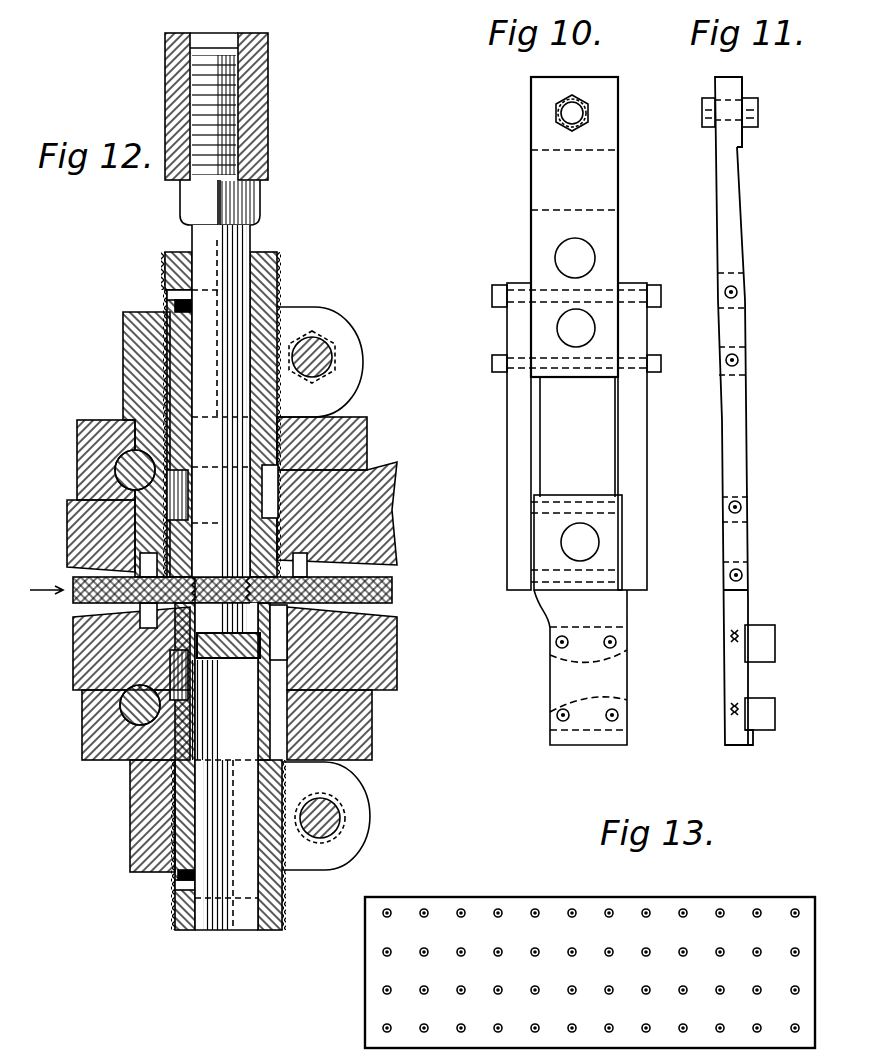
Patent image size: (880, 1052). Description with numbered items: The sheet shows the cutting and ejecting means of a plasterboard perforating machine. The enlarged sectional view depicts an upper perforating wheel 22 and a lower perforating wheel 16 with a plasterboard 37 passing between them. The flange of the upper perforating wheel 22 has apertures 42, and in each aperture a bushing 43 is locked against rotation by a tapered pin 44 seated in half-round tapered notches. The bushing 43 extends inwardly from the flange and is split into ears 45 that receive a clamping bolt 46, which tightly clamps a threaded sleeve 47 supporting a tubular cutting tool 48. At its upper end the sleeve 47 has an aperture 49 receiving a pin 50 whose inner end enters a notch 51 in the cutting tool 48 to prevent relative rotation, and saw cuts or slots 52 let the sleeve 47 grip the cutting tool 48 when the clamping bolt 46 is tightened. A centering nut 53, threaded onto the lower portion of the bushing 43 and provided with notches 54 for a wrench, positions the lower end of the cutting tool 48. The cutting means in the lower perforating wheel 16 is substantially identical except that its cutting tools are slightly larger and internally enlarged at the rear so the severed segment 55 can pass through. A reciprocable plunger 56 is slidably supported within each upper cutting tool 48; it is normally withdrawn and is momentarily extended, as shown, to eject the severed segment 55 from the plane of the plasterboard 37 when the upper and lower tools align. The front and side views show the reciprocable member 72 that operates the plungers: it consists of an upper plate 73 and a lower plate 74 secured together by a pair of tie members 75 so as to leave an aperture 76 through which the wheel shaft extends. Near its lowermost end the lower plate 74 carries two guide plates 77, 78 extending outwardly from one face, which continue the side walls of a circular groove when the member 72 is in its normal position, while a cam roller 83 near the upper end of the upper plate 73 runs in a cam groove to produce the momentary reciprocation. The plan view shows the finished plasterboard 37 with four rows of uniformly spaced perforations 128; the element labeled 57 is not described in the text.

In FIG. 12, the lower perforating wheel 16 is at (387, 633).
In FIG. 12, the upper perforating wheel 22 is at (367, 470).
In FIG. 12, the plasterboard 37 is at (392, 588).
In FIG. 13, the plasterboard 37 is at (490, 905).
In FIG. 12, the apertures 42 is at (67, 503).
In FIG. 12, the bushing 43 is at (295, 442).
In FIG. 12, the tapered pin 44 is at (133, 463).
In FIG. 12, the ears 45 is at (337, 335).
In FIG. 12, the clamping bolt 46 is at (336, 348).
In FIG. 12, the threaded sleeve 47 is at (270, 252).
In FIG. 12, the tubular cutting tool 48 is at (265, 312).
In FIG. 12, the aperture 49 is at (175, 305).
In FIG. 12, the pin 50 is at (167, 295).
In FIG. 12, the notch 51 is at (165, 290).
In FIG. 12, the saw cuts or slots 52 is at (215, 252).
In FIG. 12, the centering nut 53 is at (300, 557).
In FIG. 12, the notches 54 is at (140, 562).
In FIG. 12, the severed segment 55 is at (236, 706).
In FIG. 12, the reciprocable plunger 56 is at (242, 232).
In FIG. 12, the cap 57 is at (258, 118).
In FIG. 10, the reciprocable member 72 is at (620, 108).
In FIG. 11, the reciprocable member 72 is at (750, 144).
In FIG. 10, the upper plate 73 is at (608, 136).
In FIG. 11, the upper plate 73 is at (740, 222).
In FIG. 10, the lower plate 74 is at (615, 612).
In FIG. 11, the lower plate 74 is at (748, 592).
In FIG. 10, the tie members 75 is at (517, 430).
In FIG. 11, the tie members 75 is at (745, 407).
In FIG. 10, the aperture 76 is at (608, 465).
In FIG. 11, the guide plate 77 is at (763, 636).
In FIG. 11, the guide plate 78 is at (763, 712).
In FIG. 11, the cam roller 83 is at (752, 100).
In FIG. 13, the perforations 128 is at (648, 950).